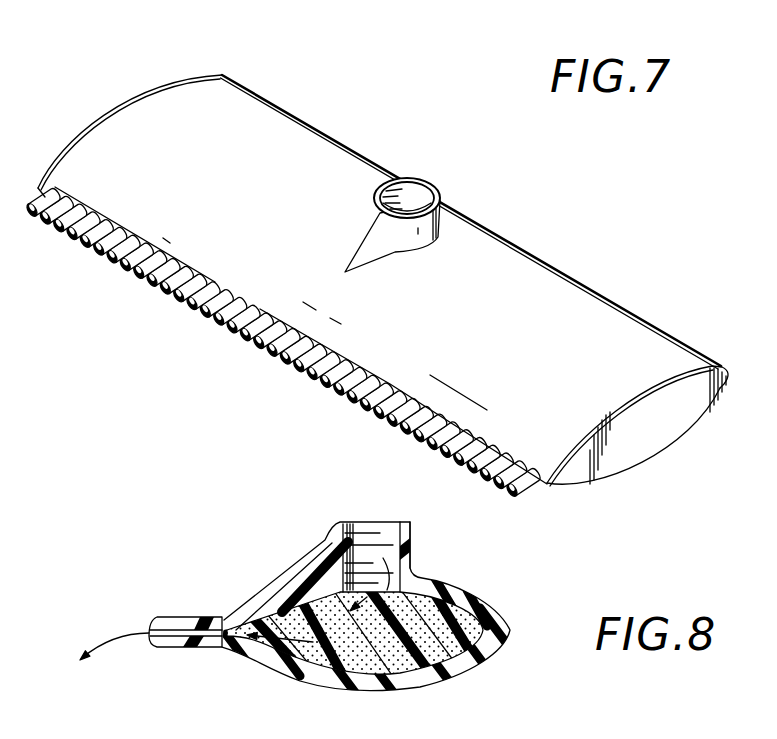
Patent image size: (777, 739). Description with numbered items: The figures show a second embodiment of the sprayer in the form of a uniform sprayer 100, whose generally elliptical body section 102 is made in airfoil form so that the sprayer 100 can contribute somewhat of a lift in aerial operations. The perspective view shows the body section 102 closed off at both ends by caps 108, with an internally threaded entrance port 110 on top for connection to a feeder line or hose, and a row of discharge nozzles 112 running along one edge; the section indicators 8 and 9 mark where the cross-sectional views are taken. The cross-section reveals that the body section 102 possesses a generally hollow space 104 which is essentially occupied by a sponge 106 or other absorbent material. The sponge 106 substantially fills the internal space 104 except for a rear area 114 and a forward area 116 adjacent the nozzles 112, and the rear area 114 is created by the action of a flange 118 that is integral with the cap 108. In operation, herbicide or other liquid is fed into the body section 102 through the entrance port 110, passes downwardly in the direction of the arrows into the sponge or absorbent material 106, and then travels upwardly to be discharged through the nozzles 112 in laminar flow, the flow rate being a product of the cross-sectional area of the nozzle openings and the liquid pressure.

In FIG. 7, the section line 8- 8 is at (500, 153).
In FIG. 7, the section line 9- 9 is at (773, 348).
In FIG. 7, the uniform sprayer 100 is at (385, 263).
In FIG. 7, the body section 102 is at (612, 308).
In FIG. 8, the body section 102 is at (425, 672).
In FIG. 8, the hollow space 104 is at (487, 636).
In FIG. 8, the sponge 106 is at (485, 655).
In FIG. 7, the caps 108 is at (183, 42).
In FIG. 7, the entrance port 110 is at (382, 193).
In FIG. 8, the entrance port 110 is at (357, 522).
In FIG. 7, the discharge nozzles 112 is at (340, 397).
In FIG. 8, the discharge nozzles 112 is at (172, 617).
In FIG. 8, the rear area 114 is at (497, 643).
In FIG. 8, the forward area 116 is at (227, 629).
In FIG. 8, the flange 118 is at (453, 738).